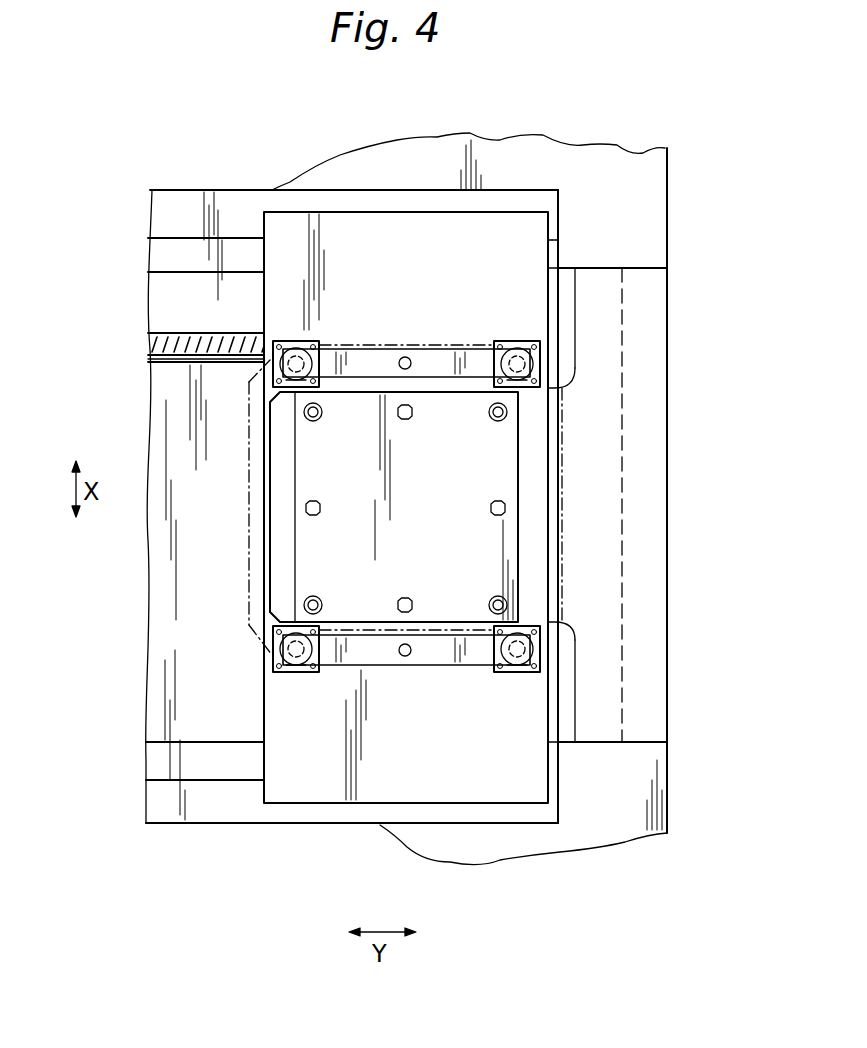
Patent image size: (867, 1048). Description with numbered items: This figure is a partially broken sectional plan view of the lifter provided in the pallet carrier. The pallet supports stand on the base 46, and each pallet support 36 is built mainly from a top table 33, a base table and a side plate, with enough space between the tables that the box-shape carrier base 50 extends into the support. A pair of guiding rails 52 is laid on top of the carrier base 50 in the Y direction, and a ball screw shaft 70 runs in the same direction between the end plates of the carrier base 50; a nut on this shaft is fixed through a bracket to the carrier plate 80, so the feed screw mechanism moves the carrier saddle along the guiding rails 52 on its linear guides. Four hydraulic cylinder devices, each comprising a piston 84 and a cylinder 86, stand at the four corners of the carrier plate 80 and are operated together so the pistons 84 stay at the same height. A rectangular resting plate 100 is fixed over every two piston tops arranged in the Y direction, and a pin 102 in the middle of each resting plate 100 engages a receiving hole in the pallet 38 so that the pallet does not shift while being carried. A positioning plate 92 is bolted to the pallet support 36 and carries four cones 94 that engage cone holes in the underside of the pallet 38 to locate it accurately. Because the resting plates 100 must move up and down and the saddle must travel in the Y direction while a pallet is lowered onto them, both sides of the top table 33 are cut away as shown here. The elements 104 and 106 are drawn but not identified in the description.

The top table 33 is at (548, 410).
The pallet support 36 is at (601, 339).
The pallet 38 is at (563, 515).
The base 46 is at (643, 198).
The carrier base 50 is at (173, 198).
The guiding rail 52 is at (225, 252).
The ball screw shaft 70 is at (163, 336).
The carrier plate 80 is at (475, 232).
The piston 84 is at (517, 648).
The cylinder 86 is at (520, 675).
The positioning plate 92 is at (490, 558).
The cone 94 is at (508, 415).
The resting plate 100 is at (340, 363).
The pin 102 is at (406, 358).
The upper arm 104 is at (542, 328).
The lower arm 106 is at (578, 680).